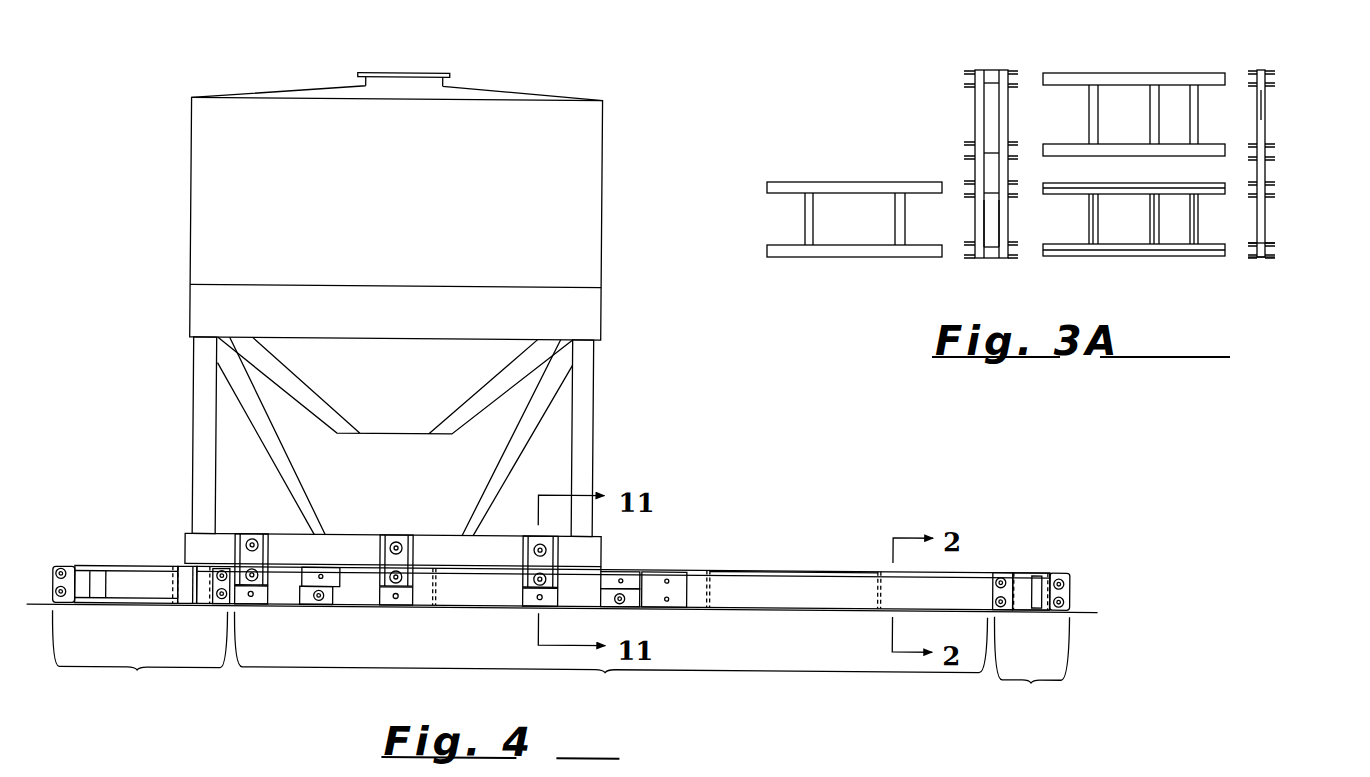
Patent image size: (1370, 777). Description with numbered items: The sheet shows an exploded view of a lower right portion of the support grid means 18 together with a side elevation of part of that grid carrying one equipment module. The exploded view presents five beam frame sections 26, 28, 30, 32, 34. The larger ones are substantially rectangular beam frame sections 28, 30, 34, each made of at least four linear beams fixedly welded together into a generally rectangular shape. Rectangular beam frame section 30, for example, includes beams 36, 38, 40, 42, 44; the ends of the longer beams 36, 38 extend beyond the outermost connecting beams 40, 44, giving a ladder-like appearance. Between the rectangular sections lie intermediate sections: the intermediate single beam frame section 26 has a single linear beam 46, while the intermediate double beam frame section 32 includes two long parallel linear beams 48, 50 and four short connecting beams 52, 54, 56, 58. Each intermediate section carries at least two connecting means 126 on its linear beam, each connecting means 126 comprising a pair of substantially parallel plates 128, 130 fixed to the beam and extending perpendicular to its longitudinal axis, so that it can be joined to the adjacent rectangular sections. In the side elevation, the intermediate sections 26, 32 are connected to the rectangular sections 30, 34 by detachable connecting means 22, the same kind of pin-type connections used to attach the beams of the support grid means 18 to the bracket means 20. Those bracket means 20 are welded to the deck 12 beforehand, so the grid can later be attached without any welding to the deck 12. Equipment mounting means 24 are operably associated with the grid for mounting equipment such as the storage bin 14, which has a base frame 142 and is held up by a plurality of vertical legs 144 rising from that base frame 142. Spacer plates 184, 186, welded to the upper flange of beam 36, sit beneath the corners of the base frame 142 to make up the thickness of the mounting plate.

In FIG. 4, the deck 12 is at (52, 603).
In FIG. 4, the storage bin 14 is at (420, 194).
In FIG. 4, the support grid means 18 is at (795, 565).
In FIG. 4, the bracket means 20 is at (340, 606).
In FIG. 4, the detachable connecting means 22 is at (224, 579).
In FIG. 4, the equipment mounting means 24 is at (250, 563).
In FIG. 3A, the intermediate single beam frame section 26 is at (1272, 130).
In FIG. 4, the intermediate single beam frame section 26 is at (1032, 664).
In FIG. 3A, the rectangular beam frame section 28 is at (1135, 68).
In FIG. 3A, the rectangular beam frame section 30 is at (1170, 255).
In FIG. 4, the rectangular beam frame section 30 is at (598, 637).
In FIG. 3A, the intermediate double beam frame section 32 is at (970, 110).
In FIG. 4, the intermediate double beam frame section 32 is at (140, 633).
In FIG. 3A, the rectangular beam frame section 34 is at (850, 178).
In FIG. 3A, the beam 36 is at (1130, 252).
In FIG. 4, the beam 36 is at (775, 579).
In FIG. 3A, the beam 38 is at (1075, 185).
In FIG. 3A, the connecting beam 40 is at (1098, 213).
In FIG. 4, the connecting beam 40 is at (442, 588).
In FIG. 3A, the beam 42 is at (1150, 217).
In FIG. 4, the beam 42 is at (714, 588).
In FIG. 3A, the connecting beam 44 is at (1198, 217).
In FIG. 4, the connecting beam 44 is at (882, 586).
In FIG. 3A, the linear beam 46 is at (1265, 107).
In FIG. 4, the linear beam 46 is at (1024, 585).
In FIG. 3A, the linear beam 48 is at (980, 217).
In FIG. 4, the linear beam 48 is at (95, 585).
In FIG. 3A, the linear beam 50 is at (1003, 217).
In FIG. 4, the linear beam 50 is at (195, 584).
In FIG. 3A, the connecting beam 52 is at (993, 72).
In FIG. 3A, the connecting beam 54 is at (990, 145).
In FIG. 3A, the connecting beam 56 is at (988, 185).
In FIG. 3A, the connecting beam 58 is at (993, 257).
In FIG. 4, the connecting beam 58 is at (137, 595).
In FIG. 3A, the connecting means 126 is at (968, 70).
In FIG. 3A, the plate 128 is at (1253, 258).
In FIG. 3A, the plate 130 is at (1253, 245).
In FIG. 4, the base frame 142 is at (437, 538).
In FIG. 4, the vertical legs 144 is at (204, 386).
In FIG. 4, the spacer plate 184 is at (184, 567).
In FIG. 4, the spacer plate 186 is at (608, 566).